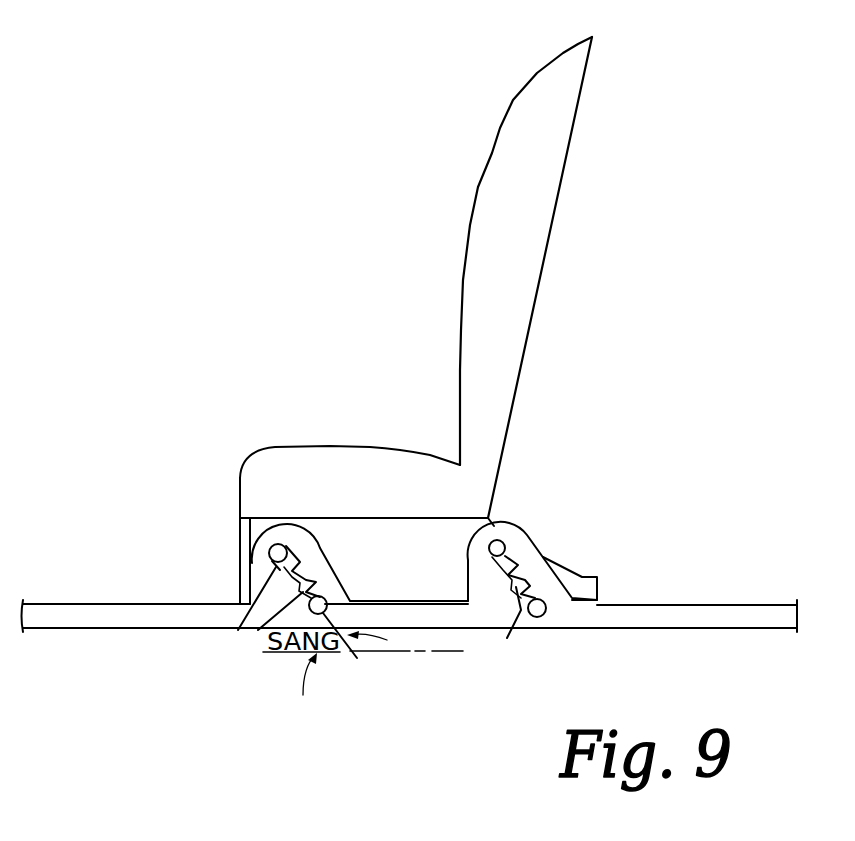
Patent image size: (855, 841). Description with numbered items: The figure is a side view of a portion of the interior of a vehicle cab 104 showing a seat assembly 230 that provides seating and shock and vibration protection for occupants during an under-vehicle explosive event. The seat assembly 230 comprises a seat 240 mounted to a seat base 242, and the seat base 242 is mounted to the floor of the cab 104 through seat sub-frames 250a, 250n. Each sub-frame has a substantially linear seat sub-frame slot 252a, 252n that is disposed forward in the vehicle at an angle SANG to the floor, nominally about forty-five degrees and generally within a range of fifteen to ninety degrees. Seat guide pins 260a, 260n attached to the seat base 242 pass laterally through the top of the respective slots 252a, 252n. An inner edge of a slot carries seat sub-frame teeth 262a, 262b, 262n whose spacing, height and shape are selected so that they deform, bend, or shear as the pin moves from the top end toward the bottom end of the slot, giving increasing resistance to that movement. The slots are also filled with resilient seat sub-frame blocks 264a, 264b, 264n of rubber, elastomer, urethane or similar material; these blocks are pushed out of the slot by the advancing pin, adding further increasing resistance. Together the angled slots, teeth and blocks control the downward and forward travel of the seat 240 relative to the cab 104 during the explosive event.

The cab 104 is at (773, 630).
The seat assembly 230 is at (396, 236).
The seat 240 is at (573, 127).
The seat base 242 is at (583, 575).
The seat sub-frame 250a is at (343, 490).
The seat sub-frame 250n is at (463, 497).
The seat sub-frame slot 252a is at (253, 628).
The seat sub-frame slot 252n is at (507, 638).
The seat guide pin 260a is at (269, 549).
The seat guide pin 260n is at (504, 541).
The seat sub-frame tooth 262a is at (295, 562).
The seat sub-frame tooth 262b is at (284, 572).
The seat sub-frame tooth 262n is at (527, 606).
The seat sub-frame block 264a is at (260, 605).
The seat sub-frame block 264b is at (309, 585).
The seat sub-frame block 264n is at (546, 616).